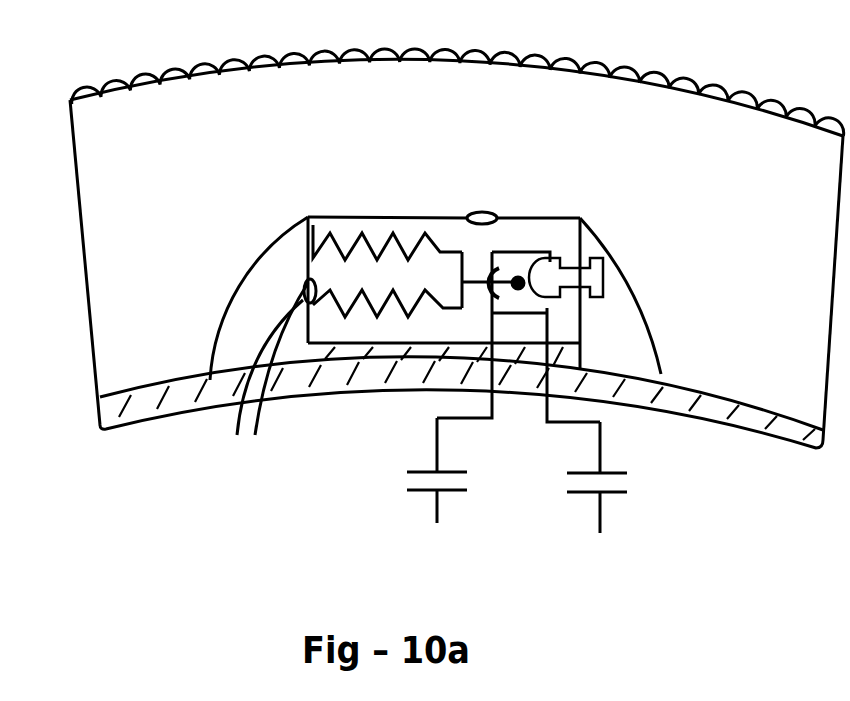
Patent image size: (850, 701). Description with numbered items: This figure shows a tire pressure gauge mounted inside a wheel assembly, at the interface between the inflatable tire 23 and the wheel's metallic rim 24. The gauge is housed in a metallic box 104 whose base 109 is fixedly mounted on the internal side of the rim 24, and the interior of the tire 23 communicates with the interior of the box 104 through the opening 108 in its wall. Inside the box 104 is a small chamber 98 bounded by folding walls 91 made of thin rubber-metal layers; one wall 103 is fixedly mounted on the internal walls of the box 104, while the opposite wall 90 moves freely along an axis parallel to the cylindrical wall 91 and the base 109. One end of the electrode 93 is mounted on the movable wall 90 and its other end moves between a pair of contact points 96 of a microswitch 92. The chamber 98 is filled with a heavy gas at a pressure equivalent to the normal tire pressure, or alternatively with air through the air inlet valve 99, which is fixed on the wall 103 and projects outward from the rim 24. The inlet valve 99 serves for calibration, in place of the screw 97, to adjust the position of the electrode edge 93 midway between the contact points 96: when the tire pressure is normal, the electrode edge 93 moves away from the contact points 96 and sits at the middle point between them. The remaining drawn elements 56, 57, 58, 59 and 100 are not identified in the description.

The inflatable tire 23 is at (97, 101).
The metallic rim 24 is at (703, 415).
The first capacitor 56 is at (422, 467).
The second capacitor 57 is at (602, 472).
The first capacitor plate terminal 58 is at (425, 495).
The second capacitor plate terminal 59 is at (605, 498).
The wall 90 is at (443, 253).
The folding walls 91 is at (368, 235).
The microswitch 92 is at (549, 252).
The electrode 93 is at (465, 281).
The contact points 96 is at (492, 288).
The screw 97 is at (603, 283).
The small chamber 98 is at (368, 280).
The air inlet valve 99 is at (230, 428).
The terminal wires 100 is at (264, 363).
The wall 103 is at (305, 283).
The metallic box 104 is at (233, 297).
The opening 108 is at (492, 213).
The base 109 is at (382, 345).